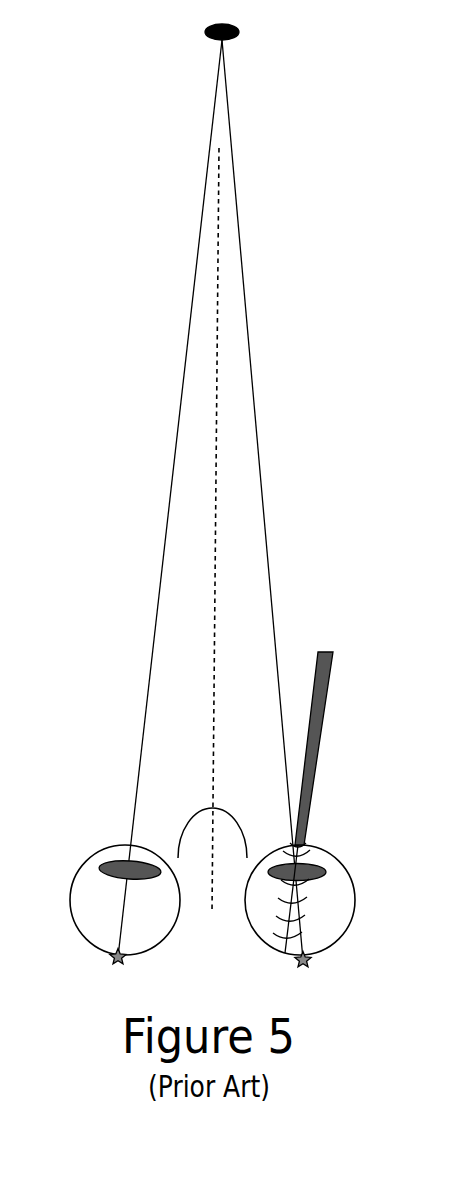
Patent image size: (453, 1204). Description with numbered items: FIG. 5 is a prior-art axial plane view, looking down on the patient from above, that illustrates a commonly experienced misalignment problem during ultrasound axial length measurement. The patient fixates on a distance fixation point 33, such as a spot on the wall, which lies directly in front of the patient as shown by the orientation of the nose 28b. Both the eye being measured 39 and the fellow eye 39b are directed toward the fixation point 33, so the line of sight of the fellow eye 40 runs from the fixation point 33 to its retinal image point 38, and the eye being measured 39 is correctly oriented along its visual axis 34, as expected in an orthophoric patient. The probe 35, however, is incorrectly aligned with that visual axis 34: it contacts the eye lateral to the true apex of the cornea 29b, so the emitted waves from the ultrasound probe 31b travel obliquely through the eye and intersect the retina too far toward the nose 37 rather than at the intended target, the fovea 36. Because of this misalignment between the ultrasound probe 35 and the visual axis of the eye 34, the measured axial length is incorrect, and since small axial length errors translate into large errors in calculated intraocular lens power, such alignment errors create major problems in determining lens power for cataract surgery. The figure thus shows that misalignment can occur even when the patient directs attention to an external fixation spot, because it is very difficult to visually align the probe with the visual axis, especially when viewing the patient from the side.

The distance fixation point 33 is at (236, 38).
The visual axis of the eye 34 is at (257, 422).
The light ray to left eye 40 is at (165, 523).
The nose 28b is at (228, 814).
The left eye 39b is at (67, 910).
The left retinal image point 38 is at (108, 962).
The eye being measured 39 is at (345, 868).
The ultrasound probe 35 is at (323, 712).
The true apex of the cornea 29b is at (307, 843).
The emitted waves from the ultrasound probe 31b is at (280, 900).
The retinal location toward the nose 37 is at (285, 953).
The fovea 36 is at (312, 963).